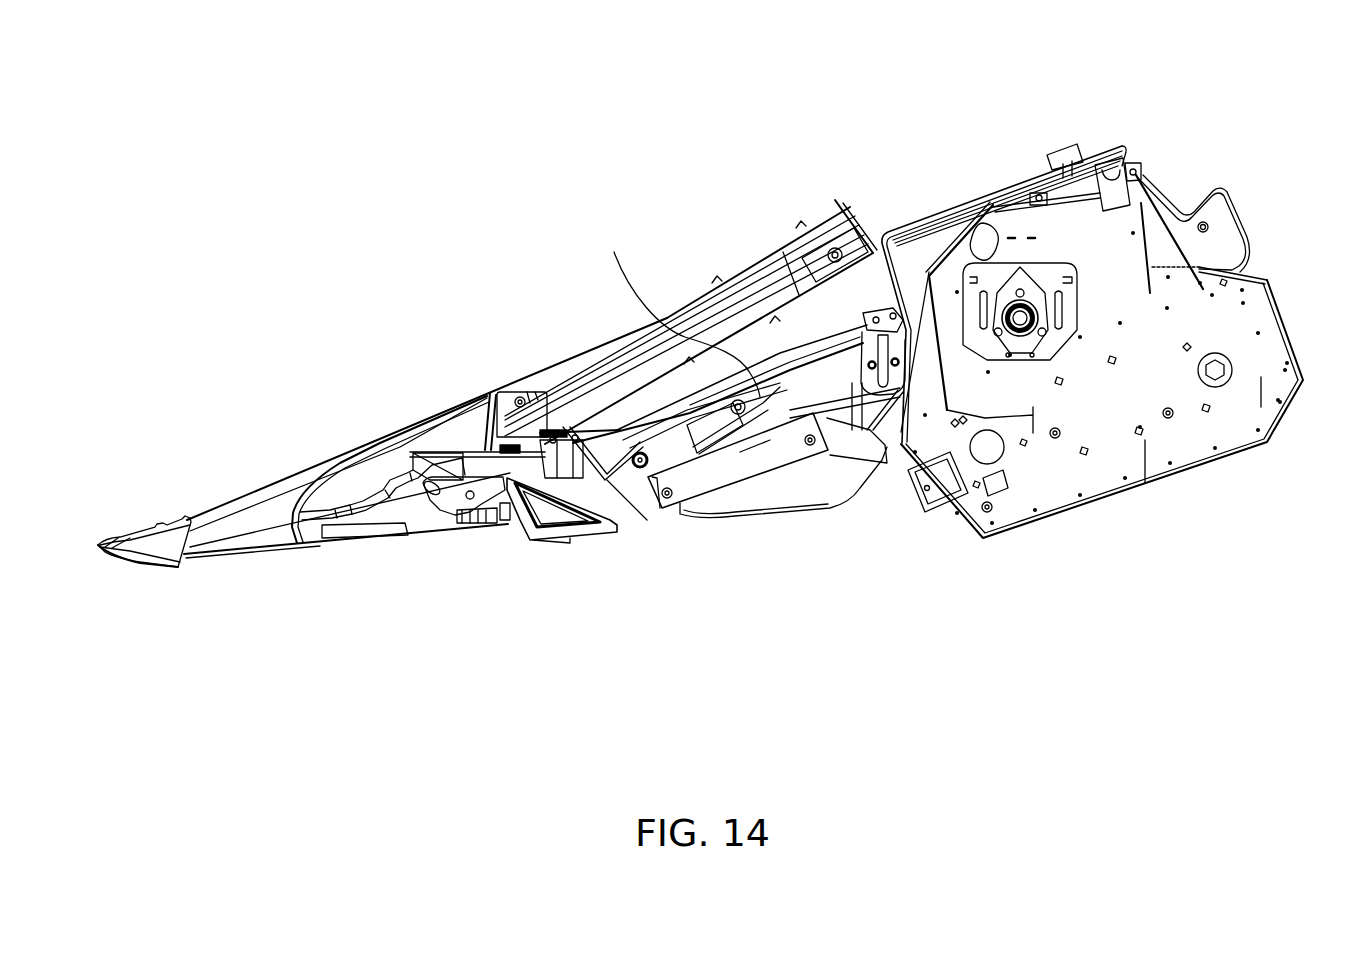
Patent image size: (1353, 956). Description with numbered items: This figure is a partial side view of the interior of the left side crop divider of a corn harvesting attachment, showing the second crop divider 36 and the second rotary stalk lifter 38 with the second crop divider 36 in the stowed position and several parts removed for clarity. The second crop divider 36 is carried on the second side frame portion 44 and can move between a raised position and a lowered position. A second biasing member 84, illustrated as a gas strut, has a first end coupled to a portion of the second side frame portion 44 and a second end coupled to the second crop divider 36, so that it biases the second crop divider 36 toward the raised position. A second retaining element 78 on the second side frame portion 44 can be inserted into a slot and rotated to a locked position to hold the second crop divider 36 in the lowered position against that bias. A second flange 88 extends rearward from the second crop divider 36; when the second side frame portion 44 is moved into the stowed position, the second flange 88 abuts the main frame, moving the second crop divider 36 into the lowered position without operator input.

The second crop divider 36 is at (940, 208).
The second rotary stalk lifter 38 is at (745, 274).
The second side frame portion 44 is at (1133, 160).
The second retaining element 78 is at (1068, 146).
The second biasing member 84 is at (678, 311).
The second flange 88 is at (1190, 200).